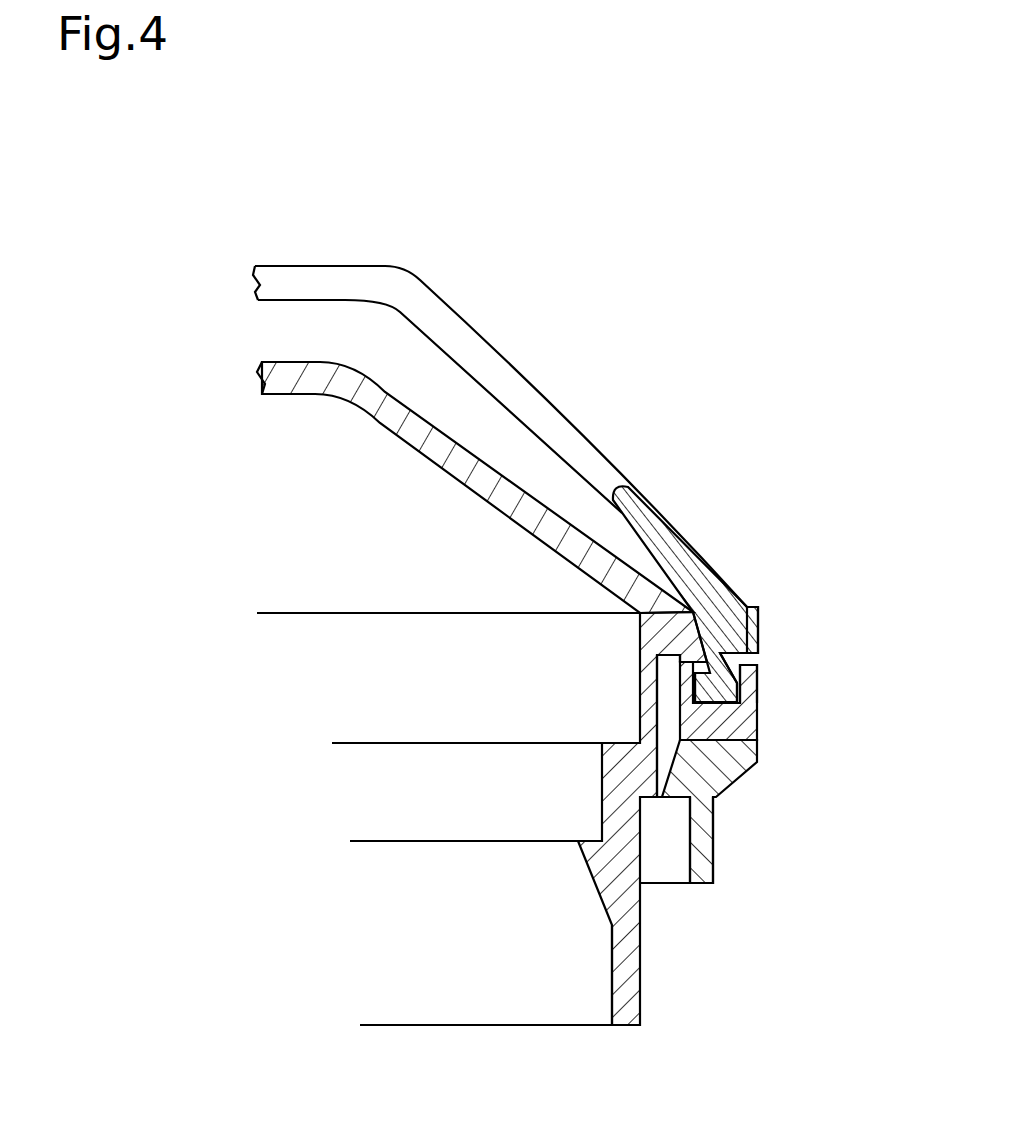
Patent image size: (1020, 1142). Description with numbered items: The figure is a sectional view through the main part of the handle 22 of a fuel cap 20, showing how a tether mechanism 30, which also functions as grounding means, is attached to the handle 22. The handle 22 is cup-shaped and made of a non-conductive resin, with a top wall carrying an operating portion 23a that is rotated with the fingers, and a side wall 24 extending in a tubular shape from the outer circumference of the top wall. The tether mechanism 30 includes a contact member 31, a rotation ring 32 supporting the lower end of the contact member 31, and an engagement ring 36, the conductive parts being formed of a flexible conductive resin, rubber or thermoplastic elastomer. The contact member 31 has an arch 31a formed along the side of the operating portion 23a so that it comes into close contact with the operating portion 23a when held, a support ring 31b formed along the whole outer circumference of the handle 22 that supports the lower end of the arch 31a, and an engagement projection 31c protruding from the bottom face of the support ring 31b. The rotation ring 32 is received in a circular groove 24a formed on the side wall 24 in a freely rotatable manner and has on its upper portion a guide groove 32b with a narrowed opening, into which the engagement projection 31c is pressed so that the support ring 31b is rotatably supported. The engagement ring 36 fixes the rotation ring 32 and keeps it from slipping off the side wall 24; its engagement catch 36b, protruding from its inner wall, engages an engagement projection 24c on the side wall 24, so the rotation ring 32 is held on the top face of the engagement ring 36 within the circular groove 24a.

The fuel cap 20 is at (420, 603).
The handle 22 is at (261, 378).
The operating portion 23a is at (384, 458).
The side wall 24 is at (511, 829).
The circular groove 24a is at (650, 745).
The engagement projection 24c is at (663, 795).
The tether mechanism 30 is at (564, 564).
The contact member 31 is at (564, 470).
The arch 31a is at (447, 312).
The support ring 31b is at (767, 617).
The engagement projection 31c is at (722, 672).
The rotation ring 32 is at (777, 729).
The guide groove 32b is at (742, 695).
The engagement ring 36 is at (748, 815).
The engagement catch 36b is at (710, 805).